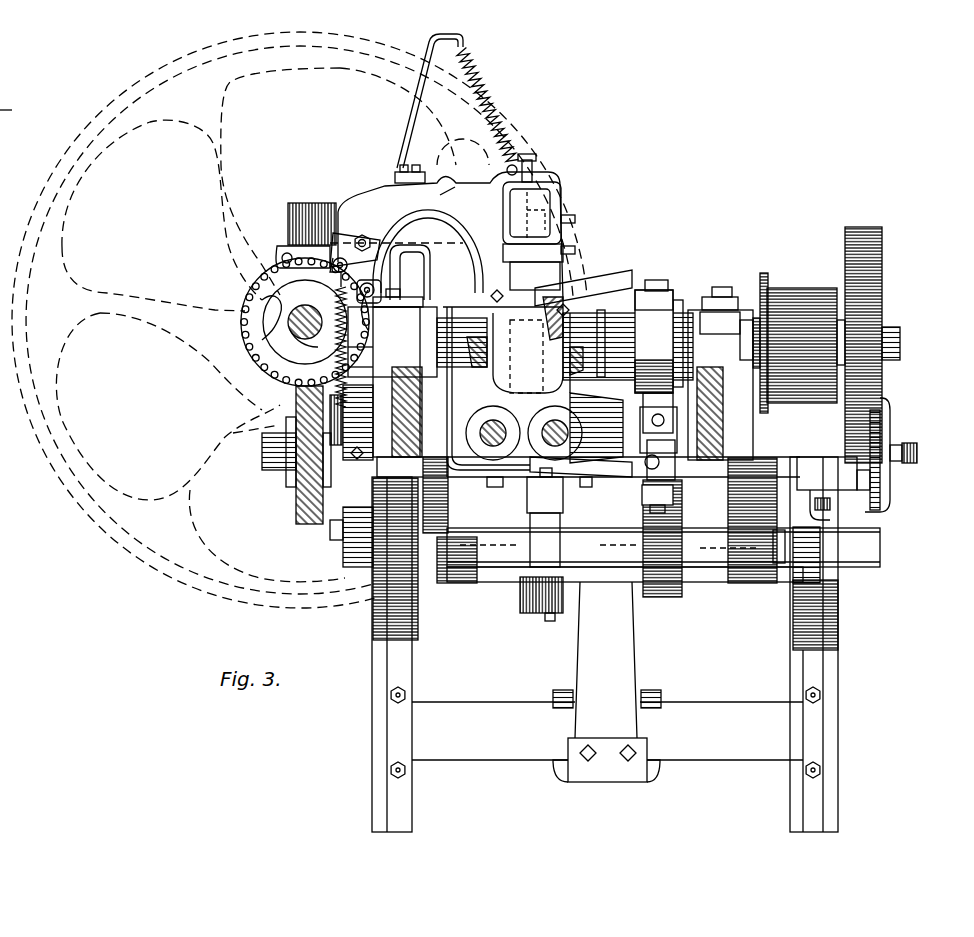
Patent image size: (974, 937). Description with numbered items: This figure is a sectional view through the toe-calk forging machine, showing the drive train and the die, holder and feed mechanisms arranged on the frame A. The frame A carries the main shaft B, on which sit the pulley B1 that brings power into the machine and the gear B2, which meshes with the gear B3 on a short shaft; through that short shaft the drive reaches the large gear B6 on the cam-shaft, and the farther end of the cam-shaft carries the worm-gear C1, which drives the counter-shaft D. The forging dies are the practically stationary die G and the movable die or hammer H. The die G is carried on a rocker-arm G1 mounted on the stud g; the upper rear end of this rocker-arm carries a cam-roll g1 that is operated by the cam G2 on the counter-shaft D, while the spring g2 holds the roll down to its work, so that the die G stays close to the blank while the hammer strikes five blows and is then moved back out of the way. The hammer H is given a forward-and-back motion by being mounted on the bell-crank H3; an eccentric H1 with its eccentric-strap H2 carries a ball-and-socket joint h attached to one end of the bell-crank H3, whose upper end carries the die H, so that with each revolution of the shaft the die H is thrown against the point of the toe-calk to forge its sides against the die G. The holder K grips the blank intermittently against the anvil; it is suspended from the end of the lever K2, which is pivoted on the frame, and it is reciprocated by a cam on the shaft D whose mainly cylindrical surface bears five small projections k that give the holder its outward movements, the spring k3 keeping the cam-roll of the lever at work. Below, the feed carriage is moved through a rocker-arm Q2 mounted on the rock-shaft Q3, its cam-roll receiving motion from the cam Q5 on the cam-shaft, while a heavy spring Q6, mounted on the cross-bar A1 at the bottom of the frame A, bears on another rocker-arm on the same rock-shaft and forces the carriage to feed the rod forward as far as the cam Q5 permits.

The projections k is at (258, 350).
The spring k3 is at (488, 92).
The holder K is at (268, 280).
The lever K2 is at (278, 256).
The die G is at (446, 237).
The rocker-arm G1 is at (503, 371).
The cam G2 is at (273, 332).
The counter-shaft D is at (288, 320).
The stud g is at (480, 433).
The cam-roll g1 is at (328, 339).
The spring g2 is at (306, 331).
The ball-and-socket joint h is at (550, 428).
The movable die or hammer H is at (565, 300).
The eccentric H1 is at (672, 304).
The eccentric-strap H2 is at (656, 366).
The bell-crank H3 is at (585, 305).
The frame A is at (593, 559).
The cross-bar A1 is at (607, 663).
The main shaft B is at (900, 340).
The pulley B1 is at (799, 339).
The gear B2 is at (882, 318).
The gear B3 is at (885, 400).
The large gear B6 is at (758, 570).
The worm-gear C1 is at (296, 455).
The rocker-arm Q2 is at (527, 513).
The rock-shaft Q3 is at (505, 560).
The cam Q5 is at (665, 590).
The heavy spring Q6 is at (606, 682).